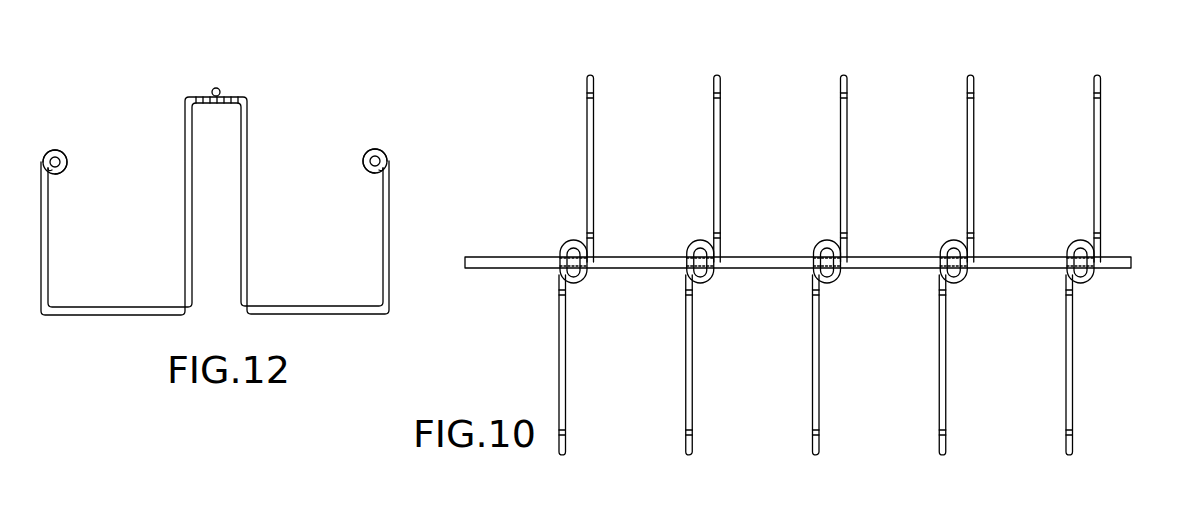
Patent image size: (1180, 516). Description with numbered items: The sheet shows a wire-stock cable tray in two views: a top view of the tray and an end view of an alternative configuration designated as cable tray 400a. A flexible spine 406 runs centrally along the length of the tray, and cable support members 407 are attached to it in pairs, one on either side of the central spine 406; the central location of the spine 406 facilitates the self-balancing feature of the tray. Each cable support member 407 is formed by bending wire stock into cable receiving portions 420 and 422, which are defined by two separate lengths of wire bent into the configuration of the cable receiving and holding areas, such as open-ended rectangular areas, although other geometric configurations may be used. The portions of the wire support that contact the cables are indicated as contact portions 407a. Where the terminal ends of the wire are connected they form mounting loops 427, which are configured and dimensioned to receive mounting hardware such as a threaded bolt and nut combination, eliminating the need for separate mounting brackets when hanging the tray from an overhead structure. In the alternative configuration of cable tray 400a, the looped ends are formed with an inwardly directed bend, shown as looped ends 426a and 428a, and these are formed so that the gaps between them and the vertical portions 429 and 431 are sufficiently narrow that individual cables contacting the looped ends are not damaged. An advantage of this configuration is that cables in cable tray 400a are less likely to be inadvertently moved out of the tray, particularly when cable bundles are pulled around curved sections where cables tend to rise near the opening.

In FIG. 12, the cable tray 400a is at (70, 331).
In FIG. 12, the flexible spine 406 is at (215, 87).
In FIG. 10, the flexible spine 406 is at (760, 262).
In FIG. 10, the cable support member 407 is at (594, 120).
In FIG. 12, the contact portions 407a is at (155, 148).
In FIG. 12, the cable receiving portion 420 is at (118, 144).
In FIG. 12, the cable receiving portion 422 is at (310, 153).
In FIG. 12, the looped end 426a is at (63, 172).
In FIG. 10, the mounting loop 427 is at (573, 242).
In FIG. 12, the second curled end 428a is at (362, 167).
In FIG. 12, the vertical portion 429 is at (52, 265).
In FIG. 12, the vertical portion 431 is at (390, 212).